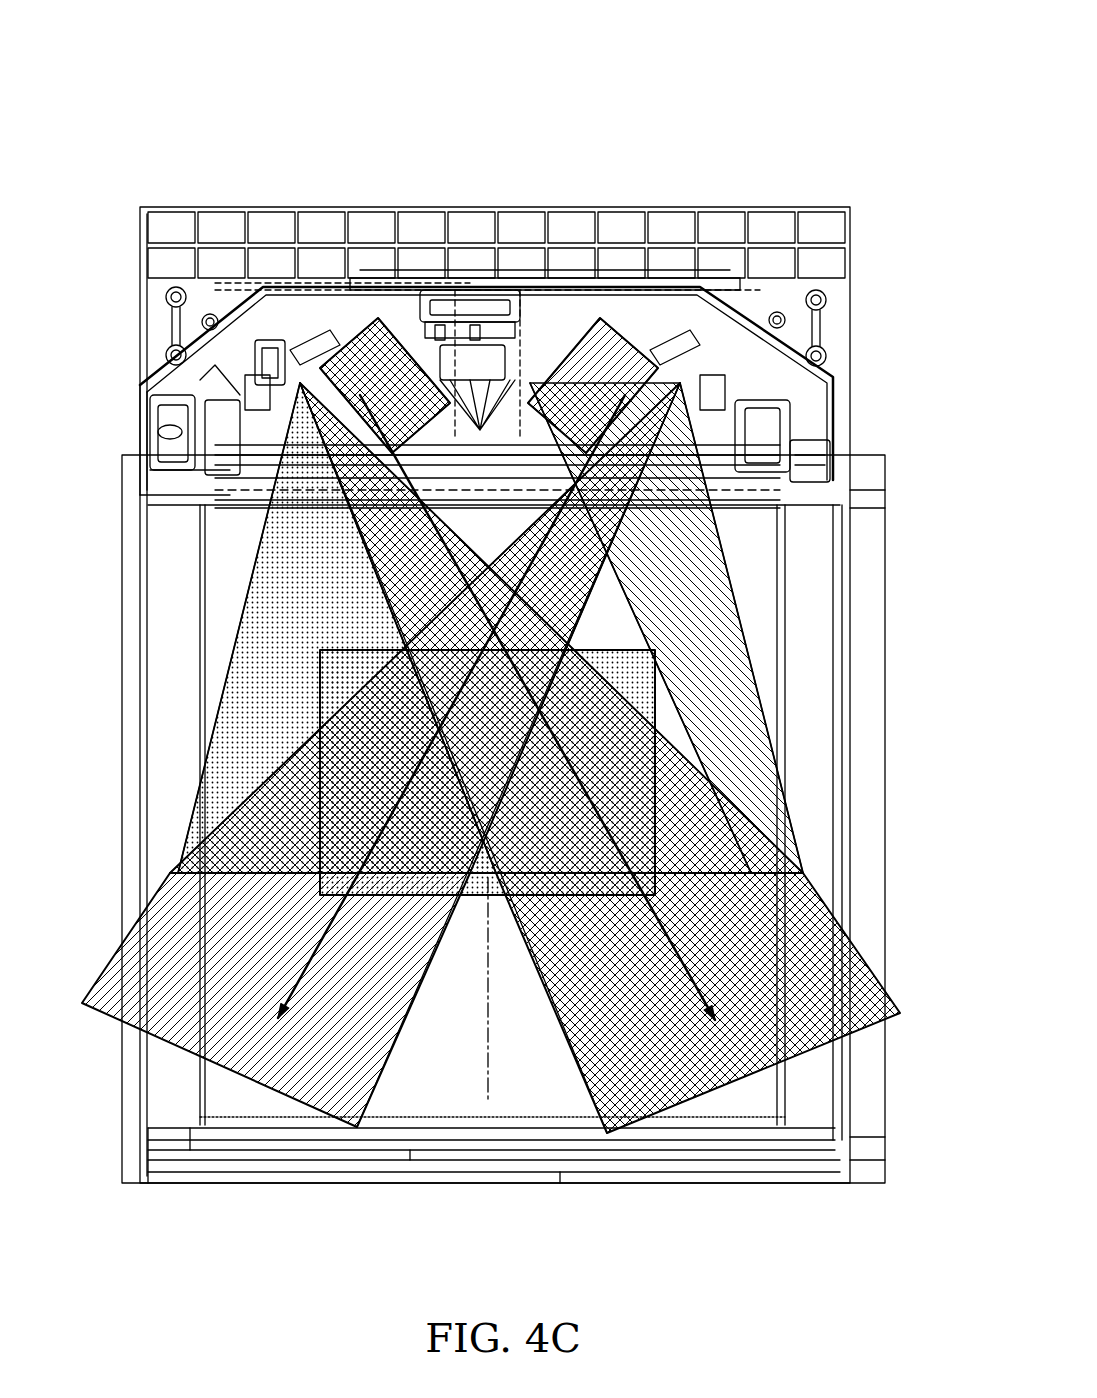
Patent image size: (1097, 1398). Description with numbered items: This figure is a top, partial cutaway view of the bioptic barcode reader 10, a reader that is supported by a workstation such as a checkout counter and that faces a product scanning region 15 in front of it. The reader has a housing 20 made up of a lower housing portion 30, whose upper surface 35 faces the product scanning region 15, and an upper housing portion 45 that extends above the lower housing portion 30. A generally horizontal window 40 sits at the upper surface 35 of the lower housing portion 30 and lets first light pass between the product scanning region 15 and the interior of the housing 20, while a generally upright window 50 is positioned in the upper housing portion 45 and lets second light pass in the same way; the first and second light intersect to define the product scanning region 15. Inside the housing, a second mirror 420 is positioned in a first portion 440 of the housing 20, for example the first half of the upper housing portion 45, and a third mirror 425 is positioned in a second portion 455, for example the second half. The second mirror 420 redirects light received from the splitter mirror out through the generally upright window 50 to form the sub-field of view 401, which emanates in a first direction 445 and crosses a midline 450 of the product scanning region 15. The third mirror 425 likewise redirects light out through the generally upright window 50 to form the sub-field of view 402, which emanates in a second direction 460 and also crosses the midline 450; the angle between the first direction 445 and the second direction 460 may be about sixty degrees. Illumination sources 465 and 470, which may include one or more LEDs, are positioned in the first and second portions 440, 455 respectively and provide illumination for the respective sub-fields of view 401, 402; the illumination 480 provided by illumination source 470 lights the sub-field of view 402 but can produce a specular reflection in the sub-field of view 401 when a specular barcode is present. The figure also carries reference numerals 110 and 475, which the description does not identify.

The bioptic barcode reader 10 is at (846, 38).
The product scanning region 15 is at (140, 470).
The housing 20 is at (855, 245).
The lower housing portion 30 is at (203, 1185).
The upper surface 35 is at (232, 642).
The generally horizontal window 40 is at (463, 900).
The upper housing portion 45 is at (845, 370).
The generally upright window 50 is at (763, 403).
The sensor module 110 is at (470, 300).
The sub-field of view 401 is at (240, 895).
The sub-field of view 402 is at (790, 873).
The second mirror 420 is at (598, 300).
The third mirror 425 is at (253, 355).
The first portion 440 is at (742, 280).
The first direction 445 is at (262, 1006).
The midline 450 is at (490, 1000).
The second portion 455 is at (262, 330).
The second direction 460 is at (802, 878).
The illumination source 465 is at (735, 390).
The illumination source 470 is at (205, 395).
The light beam 475 is at (747, 673).
The illumination 480 is at (238, 630).